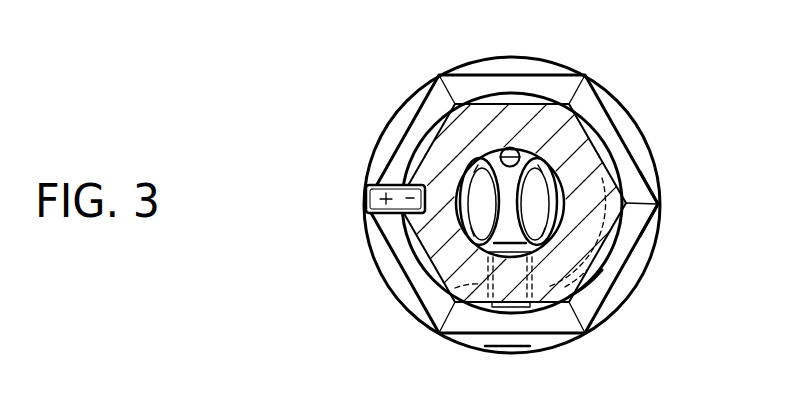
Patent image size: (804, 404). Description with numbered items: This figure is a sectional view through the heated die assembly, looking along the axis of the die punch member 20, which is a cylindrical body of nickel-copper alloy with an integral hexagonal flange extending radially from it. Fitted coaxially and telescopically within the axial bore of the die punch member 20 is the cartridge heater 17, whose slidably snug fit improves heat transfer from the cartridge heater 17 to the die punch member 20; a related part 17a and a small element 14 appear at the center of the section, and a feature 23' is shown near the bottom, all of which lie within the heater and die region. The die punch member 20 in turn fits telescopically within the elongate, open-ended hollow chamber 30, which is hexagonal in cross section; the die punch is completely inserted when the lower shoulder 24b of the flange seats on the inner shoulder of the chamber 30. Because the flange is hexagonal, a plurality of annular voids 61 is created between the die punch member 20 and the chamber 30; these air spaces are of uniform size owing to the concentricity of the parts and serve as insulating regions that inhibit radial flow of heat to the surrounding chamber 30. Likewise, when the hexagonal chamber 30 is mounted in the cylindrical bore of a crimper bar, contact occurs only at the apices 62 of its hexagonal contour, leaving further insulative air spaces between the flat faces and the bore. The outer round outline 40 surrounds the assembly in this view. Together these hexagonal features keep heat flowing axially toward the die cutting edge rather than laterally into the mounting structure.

The hole 14 is at (506, 150).
The cartridge heater 17 is at (479, 195).
The boss lobe 17a is at (573, 74).
The die punch member 20 is at (570, 148).
The slot 23' is at (530, 285).
The lower shoulder 24b is at (375, 187).
The chamber 30 is at (652, 158).
The cap flange 40 is at (513, 50).
The annular voids 61 is at (593, 260).
The apices 62 is at (658, 204).